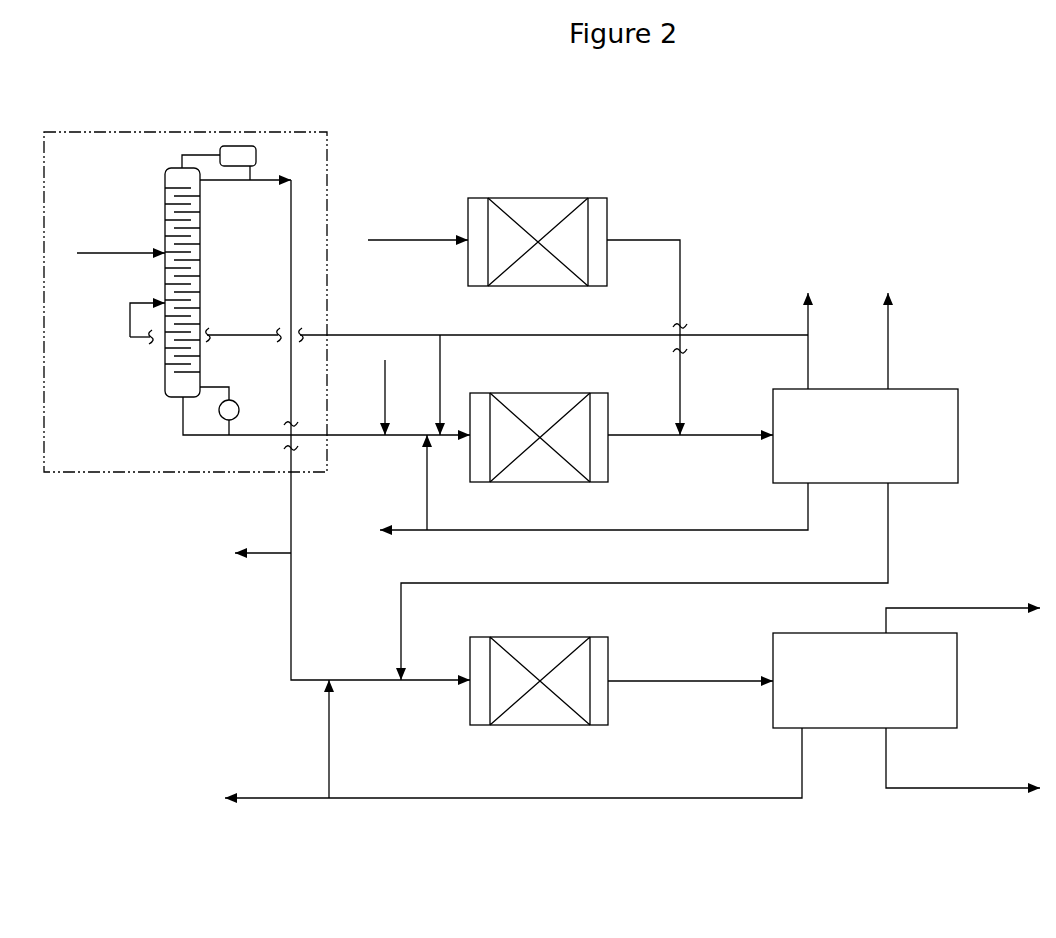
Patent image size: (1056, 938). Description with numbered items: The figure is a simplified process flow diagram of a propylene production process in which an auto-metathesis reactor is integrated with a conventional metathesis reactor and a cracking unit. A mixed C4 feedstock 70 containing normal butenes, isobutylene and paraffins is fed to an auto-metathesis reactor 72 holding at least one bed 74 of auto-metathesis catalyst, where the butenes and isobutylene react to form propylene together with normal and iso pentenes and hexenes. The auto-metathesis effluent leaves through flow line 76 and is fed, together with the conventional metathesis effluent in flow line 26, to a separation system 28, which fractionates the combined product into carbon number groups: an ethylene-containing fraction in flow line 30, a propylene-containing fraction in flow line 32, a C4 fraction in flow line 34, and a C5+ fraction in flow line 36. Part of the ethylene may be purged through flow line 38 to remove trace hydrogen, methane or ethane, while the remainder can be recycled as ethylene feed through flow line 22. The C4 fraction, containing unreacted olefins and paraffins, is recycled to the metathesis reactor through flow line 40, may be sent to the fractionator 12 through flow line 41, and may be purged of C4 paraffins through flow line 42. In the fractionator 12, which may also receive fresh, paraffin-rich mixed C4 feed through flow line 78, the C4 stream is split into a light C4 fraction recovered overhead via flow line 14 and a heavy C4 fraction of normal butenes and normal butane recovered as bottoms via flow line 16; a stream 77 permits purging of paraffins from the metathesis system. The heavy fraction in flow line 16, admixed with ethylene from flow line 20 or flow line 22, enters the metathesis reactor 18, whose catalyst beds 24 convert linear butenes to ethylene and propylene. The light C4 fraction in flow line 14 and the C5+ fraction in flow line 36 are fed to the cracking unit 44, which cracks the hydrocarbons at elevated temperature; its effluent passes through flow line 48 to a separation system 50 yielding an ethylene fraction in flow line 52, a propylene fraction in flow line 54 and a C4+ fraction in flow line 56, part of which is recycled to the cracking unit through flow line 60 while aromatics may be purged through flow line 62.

The fractionator 12 is at (164, 182).
The flow line 14 is at (290, 226).
The flow line 16 is at (180, 425).
The metathesis reactor 18 is at (608, 395).
The flow line 20 is at (385, 398).
The flow line 22 is at (422, 495).
The bed 24 is at (545, 410).
The flow line 26 is at (666, 435).
The separation system 28 is at (865, 436).
The flow line 30 is at (690, 530).
The flow line 32 is at (882, 350).
The flow line 34 is at (805, 375).
The flow line 36 is at (884, 560).
The flow line 38 is at (402, 529).
The flow line 40 is at (606, 334).
The flow line 41 is at (130, 340).
The flow line 42 is at (803, 316).
The cracking unit 44 is at (608, 646).
The flow line 48 is at (702, 680).
The separation system 50 is at (865, 680).
The flow line 52 is at (1000, 606).
The flow line 54 is at (1006, 786).
The flow line 56 is at (730, 797).
The flow line 60 is at (327, 762).
The flow line 62 is at (270, 796).
The mixed C4 feedstock 70 is at (433, 236).
The auto-metathesis reactor 72 is at (481, 196).
The bed 74 is at (558, 217).
The flow line 76 is at (672, 240).
The stream 77 is at (270, 545).
The flow line 78 is at (106, 258).